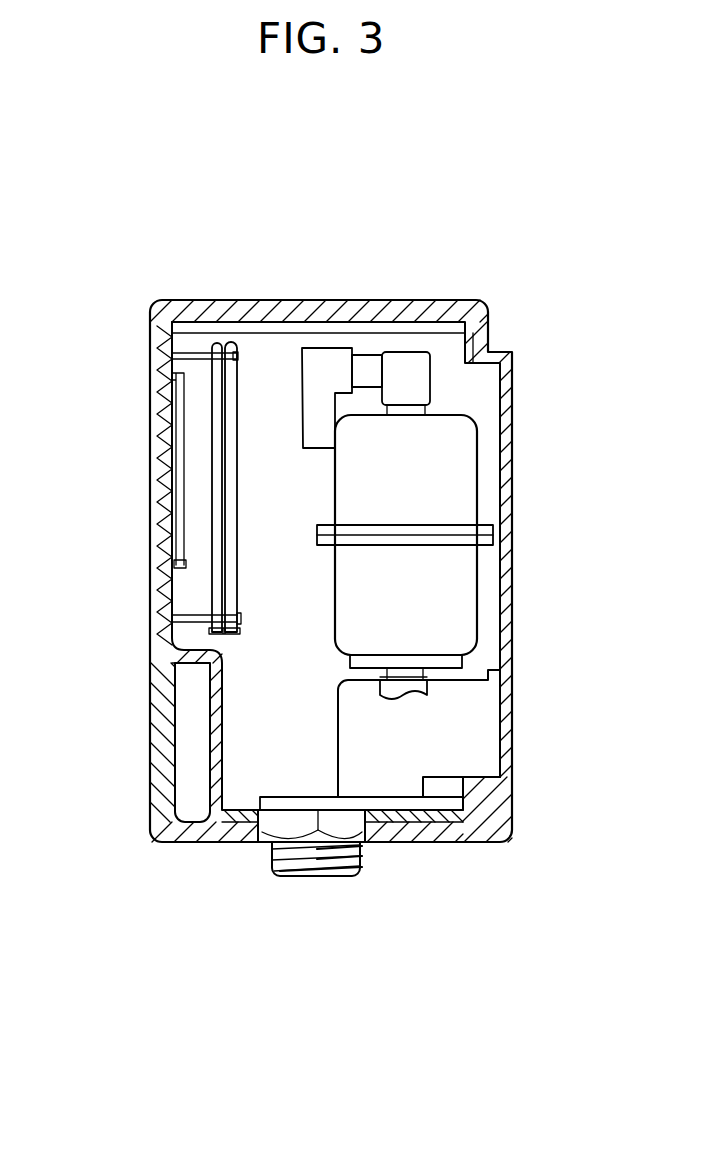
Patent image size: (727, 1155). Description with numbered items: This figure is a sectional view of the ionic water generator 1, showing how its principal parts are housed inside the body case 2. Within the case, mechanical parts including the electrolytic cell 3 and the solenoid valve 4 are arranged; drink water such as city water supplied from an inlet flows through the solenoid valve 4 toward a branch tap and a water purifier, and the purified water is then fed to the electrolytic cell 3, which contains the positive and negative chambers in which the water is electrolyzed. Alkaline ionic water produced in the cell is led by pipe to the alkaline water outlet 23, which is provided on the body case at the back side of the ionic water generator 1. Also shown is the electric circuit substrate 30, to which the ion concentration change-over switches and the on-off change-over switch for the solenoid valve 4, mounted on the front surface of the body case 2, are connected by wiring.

The ionic water generator 1 is at (137, 292).
The body case 2 is at (157, 432).
The electrolytic cell 3 is at (465, 458).
The solenoid valve 4 is at (457, 713).
The alkaline water outlet 23 is at (324, 877).
The electric circuit substrate 30 is at (217, 582).